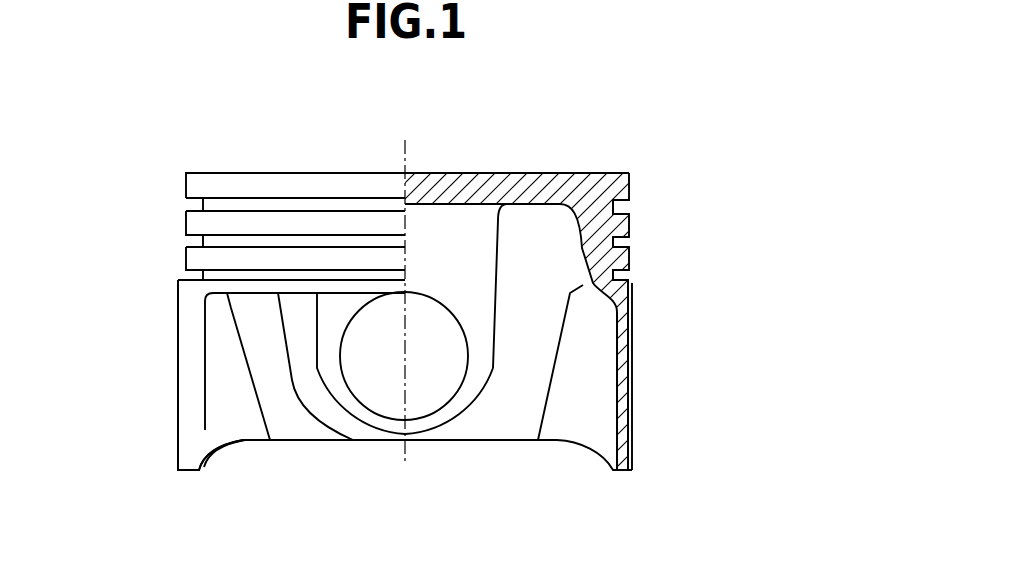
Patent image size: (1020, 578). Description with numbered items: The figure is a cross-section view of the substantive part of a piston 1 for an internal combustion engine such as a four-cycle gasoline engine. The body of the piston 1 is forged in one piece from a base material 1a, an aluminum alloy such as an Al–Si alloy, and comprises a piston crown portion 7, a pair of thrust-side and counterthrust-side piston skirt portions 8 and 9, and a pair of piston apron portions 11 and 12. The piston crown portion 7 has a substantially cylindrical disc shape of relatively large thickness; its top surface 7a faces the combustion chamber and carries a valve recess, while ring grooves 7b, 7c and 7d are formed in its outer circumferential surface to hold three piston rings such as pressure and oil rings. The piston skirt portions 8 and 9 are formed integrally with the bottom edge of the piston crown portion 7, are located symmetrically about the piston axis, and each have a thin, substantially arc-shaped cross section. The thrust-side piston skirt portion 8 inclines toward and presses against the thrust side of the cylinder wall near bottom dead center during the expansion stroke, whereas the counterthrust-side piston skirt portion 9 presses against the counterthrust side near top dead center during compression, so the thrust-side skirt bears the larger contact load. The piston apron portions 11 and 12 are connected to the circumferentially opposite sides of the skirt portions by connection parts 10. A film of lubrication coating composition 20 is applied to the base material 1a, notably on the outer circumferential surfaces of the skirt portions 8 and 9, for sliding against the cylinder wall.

The piston 1 is at (652, 170).
The base material 1a is at (648, 308).
The piston crown portion 7 is at (565, 180).
The top surface 7a is at (472, 173).
The ring groove 7b is at (627, 207).
The ring groove 7c is at (627, 242).
The ring groove 7d is at (627, 275).
The thrust-side piston skirt portion 8 is at (178, 362).
The counterthrust-side piston skirt portion 9 is at (622, 362).
The connection part 10 is at (226, 417).
The piston apron portion 11 is at (298, 427).
The piston apron portion 12 is at (494, 427).
The lubrication coating composition 20 is at (160, 307).